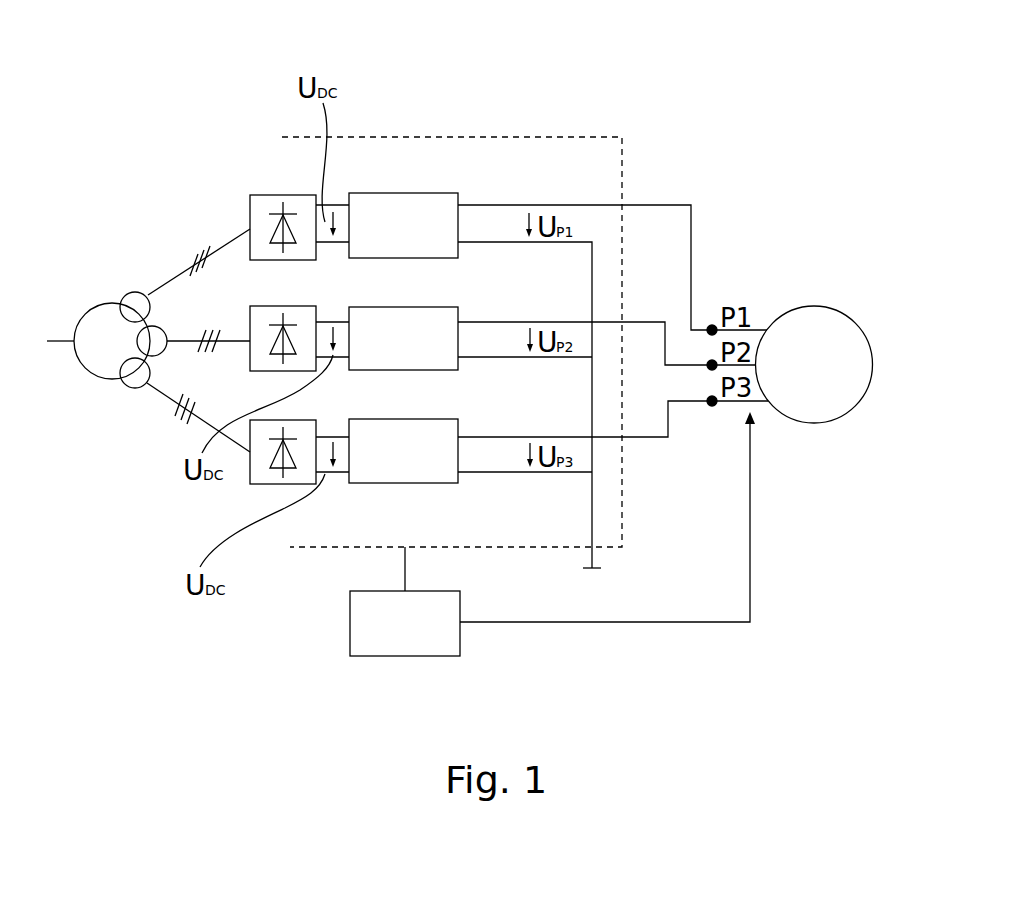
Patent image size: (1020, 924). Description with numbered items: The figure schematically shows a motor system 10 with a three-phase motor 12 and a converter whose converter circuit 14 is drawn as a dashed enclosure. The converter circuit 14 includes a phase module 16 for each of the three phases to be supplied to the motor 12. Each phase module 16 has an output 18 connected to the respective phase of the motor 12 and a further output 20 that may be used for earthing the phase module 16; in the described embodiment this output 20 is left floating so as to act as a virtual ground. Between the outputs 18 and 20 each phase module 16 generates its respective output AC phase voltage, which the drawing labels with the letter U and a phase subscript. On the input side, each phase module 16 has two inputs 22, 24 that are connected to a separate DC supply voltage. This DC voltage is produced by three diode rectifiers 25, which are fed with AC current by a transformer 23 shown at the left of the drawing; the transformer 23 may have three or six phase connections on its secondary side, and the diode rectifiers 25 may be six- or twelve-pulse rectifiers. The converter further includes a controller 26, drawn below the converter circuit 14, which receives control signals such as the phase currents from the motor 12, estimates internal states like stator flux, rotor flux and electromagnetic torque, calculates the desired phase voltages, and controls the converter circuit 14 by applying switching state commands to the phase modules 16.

The motor system 10 is at (626, 68).
The three-phase motor 12 is at (808, 306).
The converter circuit 14 is at (367, 137).
The phase module 16 is at (432, 193).
The output 18 is at (487, 205).
The output 20 is at (517, 243).
The input 22 is at (322, 206).
The transformer 23 is at (93, 305).
The input 24 is at (327, 243).
The diode rectifier 25 is at (260, 195).
The controller 26 is at (423, 657).